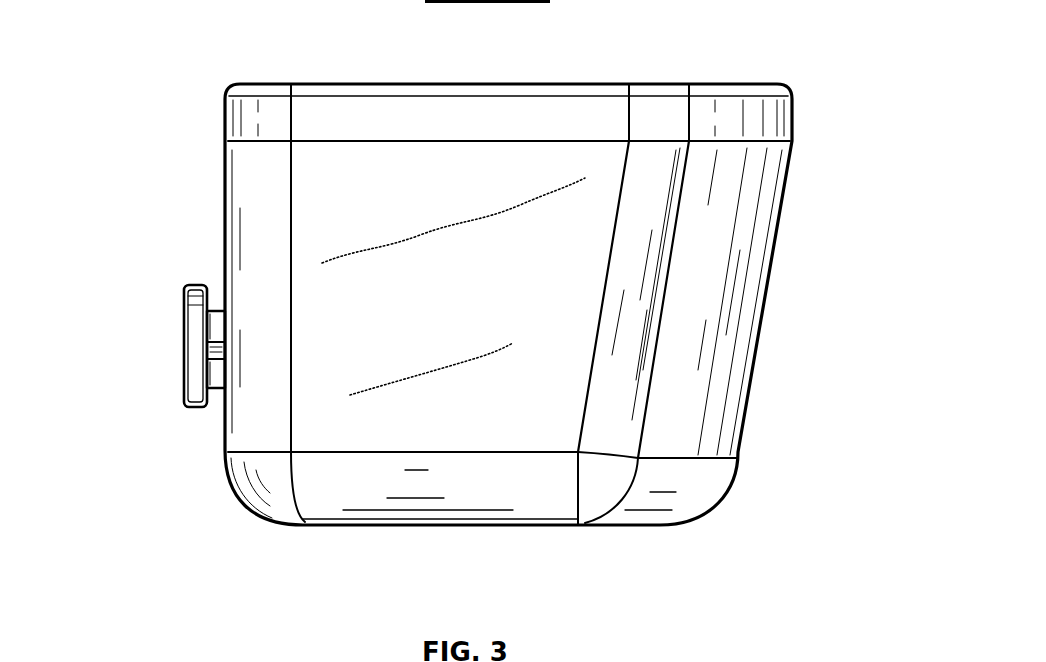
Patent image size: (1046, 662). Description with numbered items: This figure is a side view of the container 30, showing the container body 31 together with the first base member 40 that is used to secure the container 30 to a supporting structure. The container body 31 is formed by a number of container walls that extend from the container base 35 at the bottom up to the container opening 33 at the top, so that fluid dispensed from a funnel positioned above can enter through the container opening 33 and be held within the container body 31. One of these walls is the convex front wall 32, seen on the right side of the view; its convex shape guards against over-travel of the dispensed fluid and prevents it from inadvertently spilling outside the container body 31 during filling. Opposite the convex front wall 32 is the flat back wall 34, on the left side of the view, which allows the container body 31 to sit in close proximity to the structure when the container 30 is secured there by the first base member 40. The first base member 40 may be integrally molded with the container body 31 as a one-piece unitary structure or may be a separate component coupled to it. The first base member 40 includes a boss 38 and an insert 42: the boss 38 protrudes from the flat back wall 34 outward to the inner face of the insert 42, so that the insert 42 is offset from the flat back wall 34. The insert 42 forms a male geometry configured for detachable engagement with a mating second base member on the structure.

The container 30 is at (806, 88).
The container body 31 is at (760, 225).
The convex front wall 32 is at (755, 332).
The container opening 33 is at (270, 80).
The flat back wall 34 is at (227, 423).
The container base 35 is at (468, 527).
The boss 38 is at (220, 307).
The first base member 40 is at (139, 290).
The insert 42 is at (183, 333).